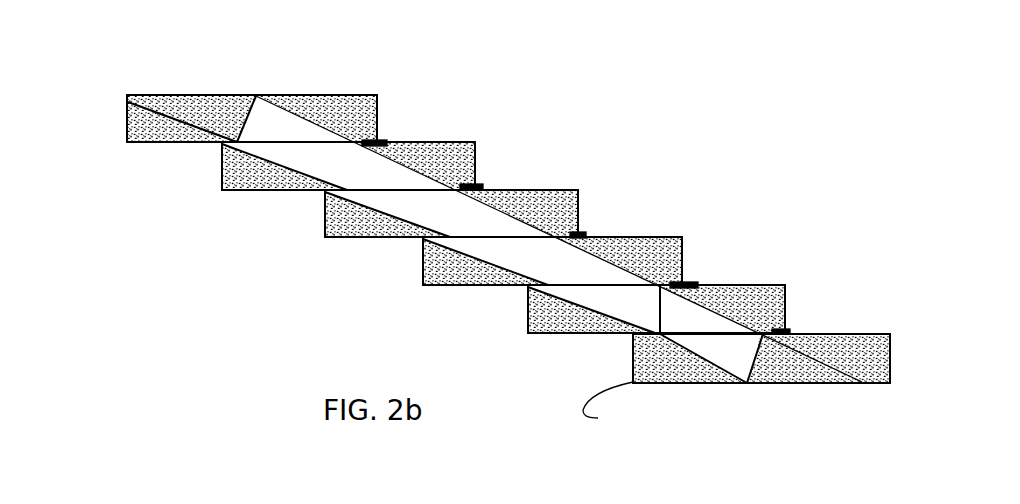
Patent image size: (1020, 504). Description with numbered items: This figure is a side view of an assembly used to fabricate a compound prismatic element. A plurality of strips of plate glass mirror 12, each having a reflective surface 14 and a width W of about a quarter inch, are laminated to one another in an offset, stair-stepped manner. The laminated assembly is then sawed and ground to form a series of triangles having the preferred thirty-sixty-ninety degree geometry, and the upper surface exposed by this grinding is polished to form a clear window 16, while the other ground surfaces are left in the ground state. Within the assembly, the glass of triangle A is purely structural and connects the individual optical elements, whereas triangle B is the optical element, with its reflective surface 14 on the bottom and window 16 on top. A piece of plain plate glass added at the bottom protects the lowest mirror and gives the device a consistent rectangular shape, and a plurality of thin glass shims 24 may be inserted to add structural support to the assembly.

The strip of plate glass mirror 12 is at (127, 140).
The reflective surface 14 is at (292, 193).
The clear window 16 is at (243, 90).
The thin glass shim 24 is at (381, 140).
The plate width W is at (178, 145).